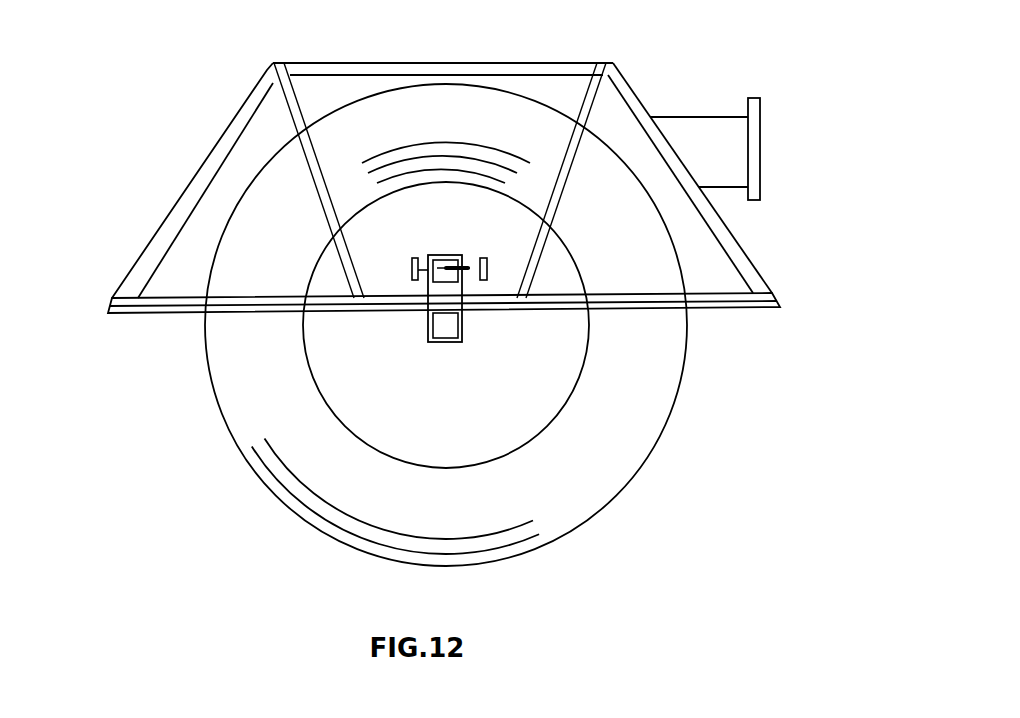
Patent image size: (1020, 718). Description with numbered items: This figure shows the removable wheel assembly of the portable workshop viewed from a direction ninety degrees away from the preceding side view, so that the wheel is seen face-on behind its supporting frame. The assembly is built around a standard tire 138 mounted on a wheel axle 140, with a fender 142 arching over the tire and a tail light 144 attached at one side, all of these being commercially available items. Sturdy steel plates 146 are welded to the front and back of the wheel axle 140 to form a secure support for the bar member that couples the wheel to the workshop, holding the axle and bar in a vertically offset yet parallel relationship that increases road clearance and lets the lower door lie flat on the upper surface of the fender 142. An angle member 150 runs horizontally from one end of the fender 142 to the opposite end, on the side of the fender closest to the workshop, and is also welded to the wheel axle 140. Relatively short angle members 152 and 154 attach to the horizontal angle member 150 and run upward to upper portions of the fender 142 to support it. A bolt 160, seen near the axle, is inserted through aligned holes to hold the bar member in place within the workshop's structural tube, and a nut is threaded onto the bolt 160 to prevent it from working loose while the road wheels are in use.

The tire 138 is at (245, 352).
The wheel axle 140 is at (453, 340).
The fender 142 is at (254, 108).
The tail light 144 is at (737, 138).
The steel plates 146 is at (457, 315).
The angle member 150 is at (140, 310).
The angle member 152 is at (320, 187).
The angle member 154 is at (603, 78).
The bolt 160 is at (462, 278).